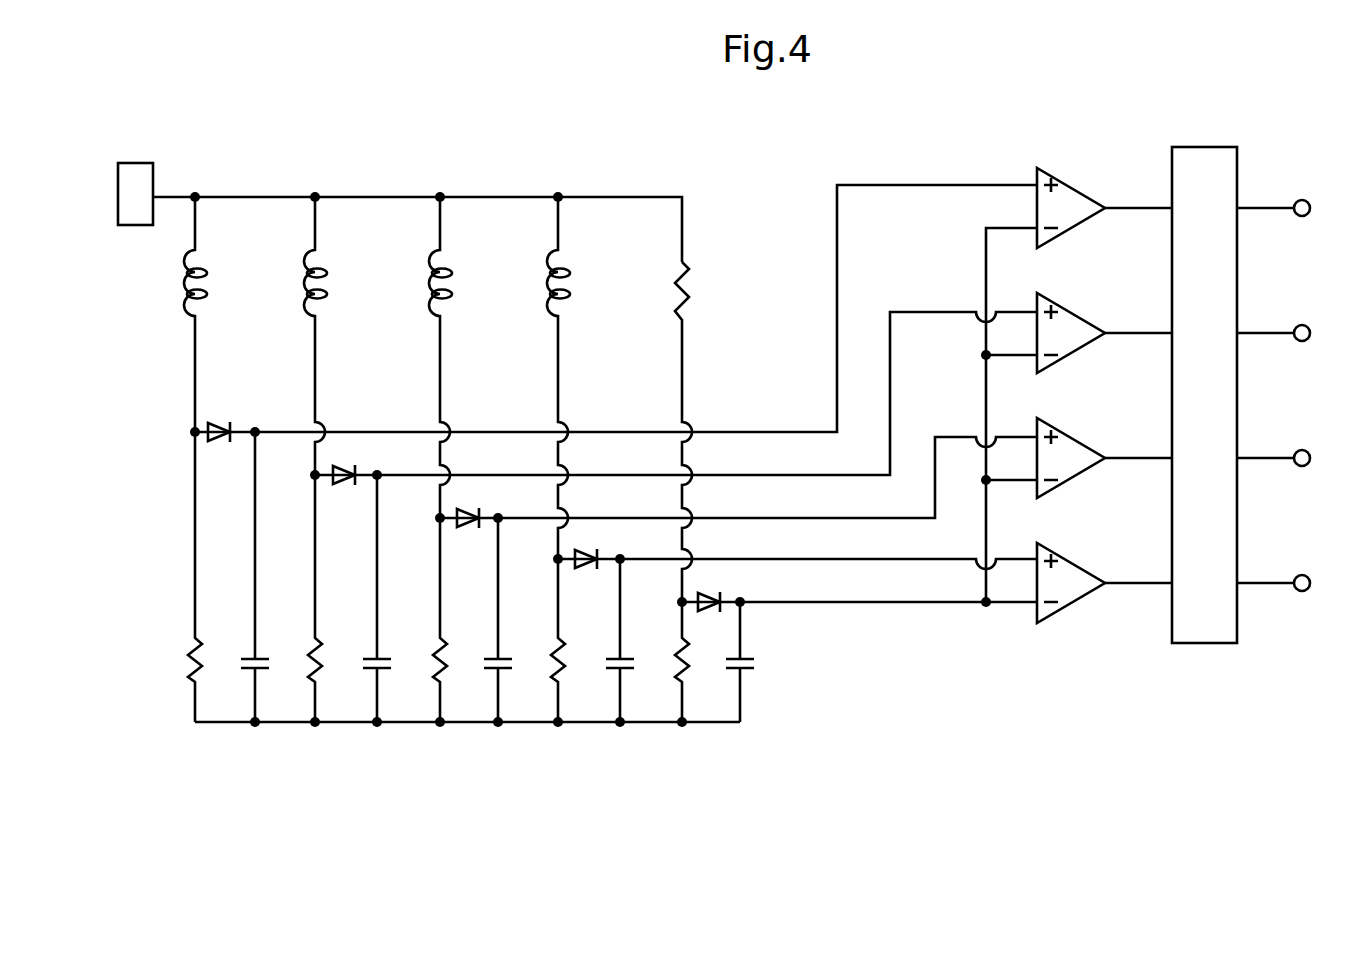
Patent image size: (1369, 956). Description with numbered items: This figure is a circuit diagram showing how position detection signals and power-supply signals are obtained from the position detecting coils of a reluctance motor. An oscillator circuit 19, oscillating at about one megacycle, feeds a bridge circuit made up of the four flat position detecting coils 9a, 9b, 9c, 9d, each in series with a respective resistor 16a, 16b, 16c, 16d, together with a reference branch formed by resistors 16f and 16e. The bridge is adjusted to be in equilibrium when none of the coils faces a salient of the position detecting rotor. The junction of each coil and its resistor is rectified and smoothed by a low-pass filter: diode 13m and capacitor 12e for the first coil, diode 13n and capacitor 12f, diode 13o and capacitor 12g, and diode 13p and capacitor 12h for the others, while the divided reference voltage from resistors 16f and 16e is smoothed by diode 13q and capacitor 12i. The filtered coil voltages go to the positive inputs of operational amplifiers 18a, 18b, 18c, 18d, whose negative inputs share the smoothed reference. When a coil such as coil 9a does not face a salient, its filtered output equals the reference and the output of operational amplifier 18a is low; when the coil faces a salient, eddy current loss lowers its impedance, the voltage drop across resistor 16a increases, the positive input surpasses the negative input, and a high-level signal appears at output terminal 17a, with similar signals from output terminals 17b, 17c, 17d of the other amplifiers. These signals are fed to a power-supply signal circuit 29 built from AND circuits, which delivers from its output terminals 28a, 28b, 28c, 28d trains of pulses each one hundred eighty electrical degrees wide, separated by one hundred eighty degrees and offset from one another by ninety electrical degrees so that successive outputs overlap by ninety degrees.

The oscillator circuit 19 is at (151, 164).
The position detecting coil 9a is at (203, 270).
The position detecting coil 9b is at (323, 270).
The position detecting coil 9c is at (448, 270).
The position detecting coil 9d is at (566, 270).
The resistor 16a is at (186, 655).
The resistor 16b is at (306, 655).
The resistor 16c is at (431, 655).
The resistor 16d is at (549, 655).
The resistor 16e is at (673, 655).
The resistor 16f is at (690, 268).
The diode 13m is at (218, 423).
The diode 13n is at (343, 470).
The diode 13o is at (468, 512).
The diode 13p is at (588, 553).
The diode 13q is at (708, 594).
The capacitor 12e is at (238, 660).
The capacitor 12f is at (360, 660).
The capacitor 12g is at (480, 660).
The capacitor 12h is at (605, 660).
The capacitor 12i is at (755, 667).
The operational amplifier 18a is at (1066, 180).
The operational amplifier 18b is at (1066, 306).
The operational amplifier 18c is at (1064, 440).
The operational amplifier 18d is at (1064, 565).
The output terminal 17a is at (1132, 208).
The output terminal 17b is at (1132, 333).
The output terminal 17c is at (1130, 458).
The output terminal 17d is at (1130, 583).
The power-supply signal circuit 29 is at (1193, 147).
The output terminal 28a is at (1308, 201).
The output terminal 28b is at (1308, 326).
The output terminal 28c is at (1308, 451).
The output terminal 28d is at (1308, 576).